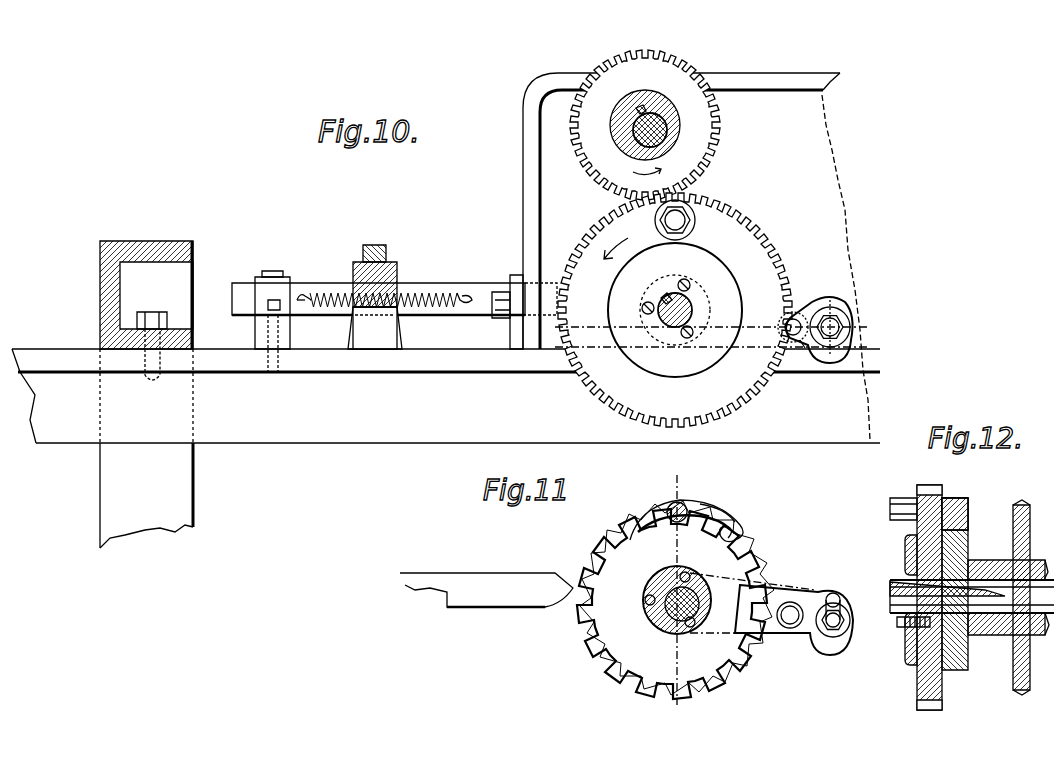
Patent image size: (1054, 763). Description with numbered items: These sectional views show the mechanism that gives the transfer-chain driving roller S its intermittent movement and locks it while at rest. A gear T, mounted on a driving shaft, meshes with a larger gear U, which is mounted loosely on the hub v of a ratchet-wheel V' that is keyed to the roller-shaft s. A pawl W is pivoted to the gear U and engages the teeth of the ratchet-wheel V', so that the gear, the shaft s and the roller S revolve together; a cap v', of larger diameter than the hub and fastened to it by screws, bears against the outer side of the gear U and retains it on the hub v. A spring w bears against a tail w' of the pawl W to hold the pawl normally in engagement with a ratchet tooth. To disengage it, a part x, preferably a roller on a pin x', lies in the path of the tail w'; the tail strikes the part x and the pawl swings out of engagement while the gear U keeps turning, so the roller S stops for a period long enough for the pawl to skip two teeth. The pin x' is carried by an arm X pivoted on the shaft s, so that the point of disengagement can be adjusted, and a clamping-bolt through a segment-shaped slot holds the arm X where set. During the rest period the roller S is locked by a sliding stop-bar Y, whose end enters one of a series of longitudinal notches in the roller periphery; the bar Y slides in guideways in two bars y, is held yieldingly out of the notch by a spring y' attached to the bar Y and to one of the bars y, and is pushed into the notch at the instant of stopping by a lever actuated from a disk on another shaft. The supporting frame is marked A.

In FIG. 10, the base beam A is at (446, 448).
In FIG. 10, the gear T is at (706, 152).
In FIG. 10, the larger gear U is at (742, 232).
In FIG. 12, the larger gear U is at (945, 687).
In FIG. 10, the cap v' is at (680, 310).
In FIG. 12, the cap v' is at (926, 584).
In FIG. 11, the hub v is at (677, 607).
In FIG. 10, the roller S is at (665, 322).
In FIG. 11, the roller S is at (690, 583).
In FIG. 11, the roller-shaft s is at (600, 543).
In FIG. 12, the roller-shaft s is at (898, 625).
In FIG. 11, the ratchet-wheel V' is at (660, 604).
In FIG. 12, the ratchet-wheel V' is at (902, 683).
In FIG. 10, the arm X is at (795, 312).
In FIG. 11, the arm X is at (794, 620).
In FIG. 10, the part x is at (826, 358).
In FIG. 11, the part x is at (824, 603).
In FIG. 10, the pin x' is at (792, 354).
In FIG. 11, the pin x' is at (735, 567).
In FIG. 10, the sliding stop-bar Y is at (483, 292).
In FIG. 11, the sliding stop-bar Y is at (510, 582).
In FIG. 10, the bars y is at (374, 321).
In FIG. 10, the spring y' is at (354, 328).
In FIG. 11, the pawl W is at (710, 508).
In FIG. 12, the pawl W is at (955, 506).
In FIG. 11, the spring w is at (752, 527).
In FIG. 11, the tail w' is at (733, 508).